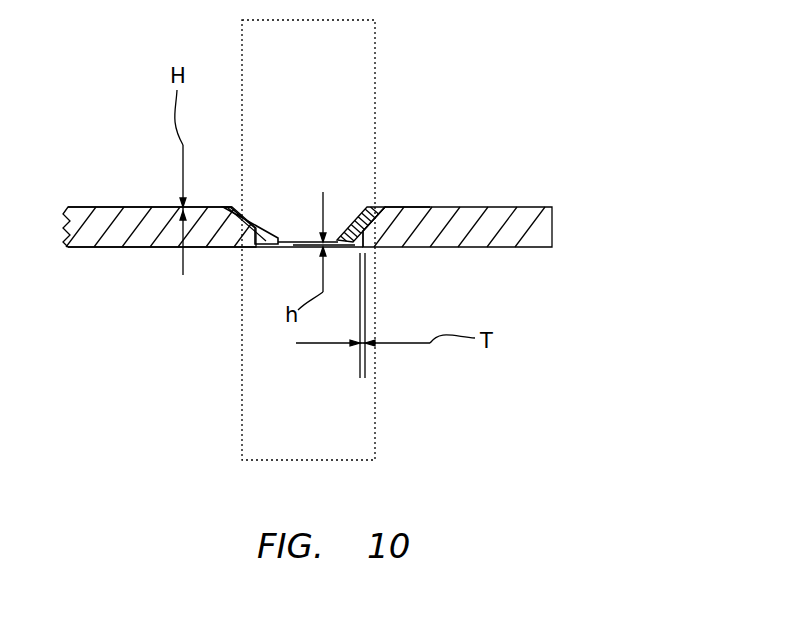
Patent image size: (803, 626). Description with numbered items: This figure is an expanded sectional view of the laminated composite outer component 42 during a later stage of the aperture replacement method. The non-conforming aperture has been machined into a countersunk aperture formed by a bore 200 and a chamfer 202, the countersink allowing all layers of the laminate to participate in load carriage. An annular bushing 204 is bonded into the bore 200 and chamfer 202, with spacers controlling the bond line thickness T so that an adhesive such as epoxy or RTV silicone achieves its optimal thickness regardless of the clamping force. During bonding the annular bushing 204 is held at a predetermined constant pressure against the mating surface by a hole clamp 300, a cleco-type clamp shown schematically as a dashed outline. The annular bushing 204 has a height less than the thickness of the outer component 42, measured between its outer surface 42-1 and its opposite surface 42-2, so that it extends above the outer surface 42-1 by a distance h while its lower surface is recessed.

The outer component 42 is at (528, 190).
The outer surface 42-1 is at (102, 207).
The bottom surface of plate 42-2 is at (103, 247).
The bore 200 is at (236, 247).
The chamfer 202 is at (422, 207).
The annular bushing 204 is at (380, 198).
The hole clamp 300 is at (375, 67).